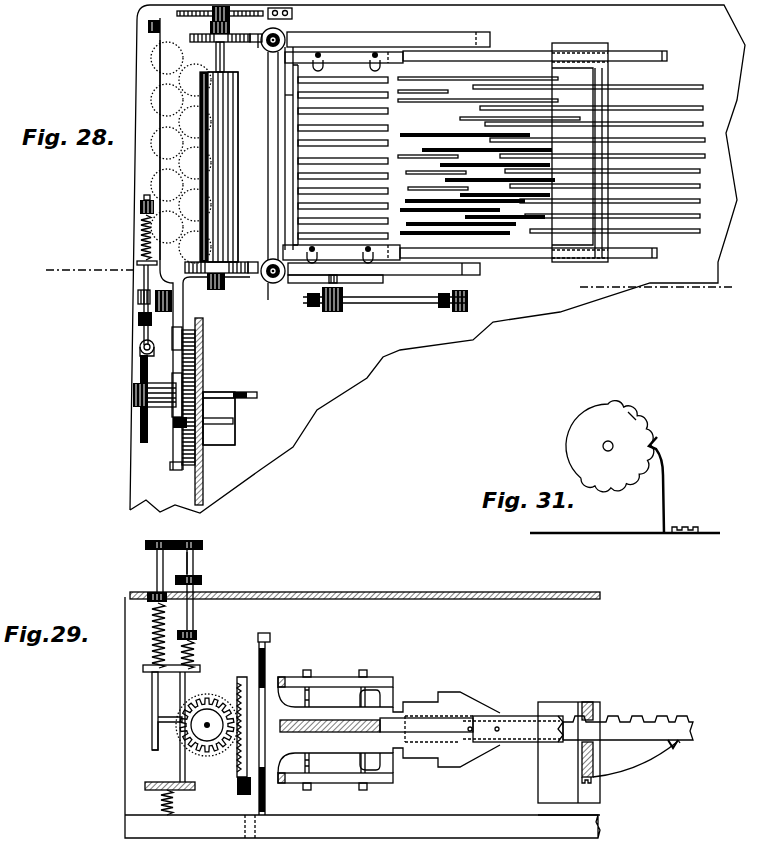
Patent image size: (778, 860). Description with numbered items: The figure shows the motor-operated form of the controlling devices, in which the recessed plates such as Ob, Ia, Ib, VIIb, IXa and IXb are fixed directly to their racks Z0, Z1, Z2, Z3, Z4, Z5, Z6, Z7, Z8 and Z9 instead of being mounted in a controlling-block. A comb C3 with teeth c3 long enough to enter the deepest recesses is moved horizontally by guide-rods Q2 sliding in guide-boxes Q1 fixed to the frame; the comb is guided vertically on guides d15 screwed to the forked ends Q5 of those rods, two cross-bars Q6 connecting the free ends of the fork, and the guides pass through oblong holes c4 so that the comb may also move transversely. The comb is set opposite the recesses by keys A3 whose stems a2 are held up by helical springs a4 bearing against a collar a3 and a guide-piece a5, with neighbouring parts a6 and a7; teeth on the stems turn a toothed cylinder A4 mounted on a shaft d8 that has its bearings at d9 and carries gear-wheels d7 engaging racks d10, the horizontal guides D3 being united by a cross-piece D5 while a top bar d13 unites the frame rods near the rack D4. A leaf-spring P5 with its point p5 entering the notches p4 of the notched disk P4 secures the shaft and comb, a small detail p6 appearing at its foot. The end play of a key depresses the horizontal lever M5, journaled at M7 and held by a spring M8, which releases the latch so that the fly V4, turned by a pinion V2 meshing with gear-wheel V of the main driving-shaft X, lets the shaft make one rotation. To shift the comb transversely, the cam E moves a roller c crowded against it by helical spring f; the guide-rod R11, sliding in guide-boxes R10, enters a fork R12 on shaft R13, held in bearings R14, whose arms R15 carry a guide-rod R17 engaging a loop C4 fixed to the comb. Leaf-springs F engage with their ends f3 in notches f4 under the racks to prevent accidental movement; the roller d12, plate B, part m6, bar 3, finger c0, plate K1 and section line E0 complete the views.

In FIG. 28, the notched disk P4 is at (177, 13).
In FIG. 31, the notched disk P4 is at (637, 437).
In FIG. 28, the journal of lever M5 M7 is at (148, 27).
In FIG. 28, the gear-wheels d7 is at (192, 38).
In FIG. 29, the gear-wheels d7 is at (207, 710).
In FIG. 28, the racks d10 is at (234, 29).
In FIG. 29, the racks d10 is at (240, 770).
In FIG. 28, the shaft d8 is at (226, 56).
In FIG. 31, the shaft d8 is at (603, 448).
In FIG. 28, the leaf-spring P5 is at (258, 48).
In FIG. 31, the leaf-spring P5 is at (664, 487).
In FIG. 28, the cross-bars Q6 is at (292, 93).
In FIG. 29, the cross-bars Q6 is at (279, 678).
In FIG. 28, the toothed cylinder A4 is at (233, 130).
In FIG. 29, the toothed cylinder A4 is at (195, 724).
In FIG. 28, the cross-piece D5 is at (233, 195).
In FIG. 28, the horizontal lever M5 is at (165, 78).
In FIG. 29, the horizontal lever M5 is at (165, 775).
In FIG. 28, the keys A3 is at (150, 132).
In FIG. 29, the keys A3 is at (202, 578).
In FIG. 28, the guide-boxes R10 is at (140, 207).
In FIG. 28, the helical spring f is at (141, 245).
In FIG. 28, the section line E0 is at (385, 280).
In FIG. 28, the guide-rod R11 is at (146, 284).
In FIG. 28, the fork R12 is at (140, 318).
In FIG. 28, the bearings R14 is at (163, 313).
In FIG. 28, the roller c is at (140, 350).
In FIG. 28, the cam-wheel E is at (138, 420).
In FIG. 28, the pinion V2 is at (176, 430).
In FIG. 28, the gear-wheel V is at (197, 340).
In FIG. 28, the plate B is at (202, 370).
In FIG. 28, the main driving-shaft X is at (240, 393).
In FIG. 28, the fly V4 is at (228, 440).
In FIG. 28, the bearing m6 is at (172, 467).
In FIG. 28, the bearings of shaft d8 d9 is at (226, 282).
In FIG. 28, the roller d12 is at (285, 34).
In FIG. 28, the rack D4 is at (270, 284).
In FIG. 29, the rack D4 is at (248, 780).
In FIG. 28, the comb C3 is at (346, 73).
In FIG. 29, the comb C3 is at (326, 722).
In FIG. 28, the oblong holes c4 is at (325, 60).
In FIG. 28, the guides d15 is at (380, 55).
In FIG. 29, the guides d15 is at (366, 696).
In FIG. 28, the forked ends Q5 is at (382, 258).
In FIG. 29, the forked ends Q5 is at (327, 680).
In FIG. 28, the guides D3 is at (440, 40).
In FIG. 29, the guides D3 is at (402, 722).
In FIG. 28, the shaft R13 is at (292, 284).
In FIG. 28, the guide-rod R17 is at (392, 305).
In FIG. 28, the arms R15 is at (312, 308).
In FIG. 28, the loop C4 is at (345, 312).
In FIG. 28, the guide-rods Q2 is at (508, 54).
In FIG. 29, the guide-rods Q2 is at (534, 716).
In FIG. 28, the guide-boxes Q1 is at (568, 45).
In FIG. 29, the guide-boxes Q1 is at (569, 758).
In FIG. 28, the bar 3 is at (598, 95).
In FIG. 29, the bar 3 is at (594, 714).
In FIG. 28, the recessed plate Ob is at (424, 84).
In FIG. 28, the recessed plate Ib is at (424, 106).
In FIG. 28, the recessed plate Ia is at (560, 103).
In FIG. 28, the finger c0 is at (392, 91).
In FIG. 28, the comb teeth c3 is at (396, 198).
In FIG. 28, the recessed plate IXb is at (428, 236).
In FIG. 28, the recessed plate IXa is at (467, 236).
In FIG. 28, the rack Z0 is at (672, 86).
In FIG. 28, the rack Z1 is at (690, 110).
In FIG. 28, the rack Z2 is at (690, 125).
In FIG. 28, the rack Z3 is at (705, 140).
In FIG. 28, the rack Z4 is at (705, 156).
In FIG. 28, the rack Z5 is at (700, 171).
In FIG. 28, the rack Z6 is at (700, 186).
In FIG. 28, the rack Z7 is at (700, 201).
In FIG. 29, the rack Z7 is at (658, 733).
In FIG. 28, the rack Z8 is at (700, 216).
In FIG. 28, the rack Z9 is at (690, 233).
In FIG. 31, the notches p4 is at (643, 417).
In FIG. 31, the point of leaf-spring p5 is at (658, 447).
In FIG. 31, the ratchet p6 is at (687, 527).
In FIG. 29, the top plate K1 is at (333, 594).
In FIG. 29, the key stems a2 is at (186, 574).
In FIG. 29, the collar a3 is at (147, 597).
In FIG. 29, the helical springs a4 is at (152, 630).
In FIG. 29, the guide-piece a5 is at (143, 668).
In FIG. 29, the plate a6 is at (165, 700).
In FIG. 29, the bracket a7 is at (150, 746).
In FIG. 29, the spring M8 is at (162, 808).
In FIG. 29, the top bar d13 is at (268, 642).
In FIG. 29, the recessed plate VIIb is at (480, 695).
In FIG. 29, the leaf-spring F is at (612, 775).
In FIG. 29, the spring end f3 is at (673, 750).
In FIG. 29, the notch f4 is at (681, 743).